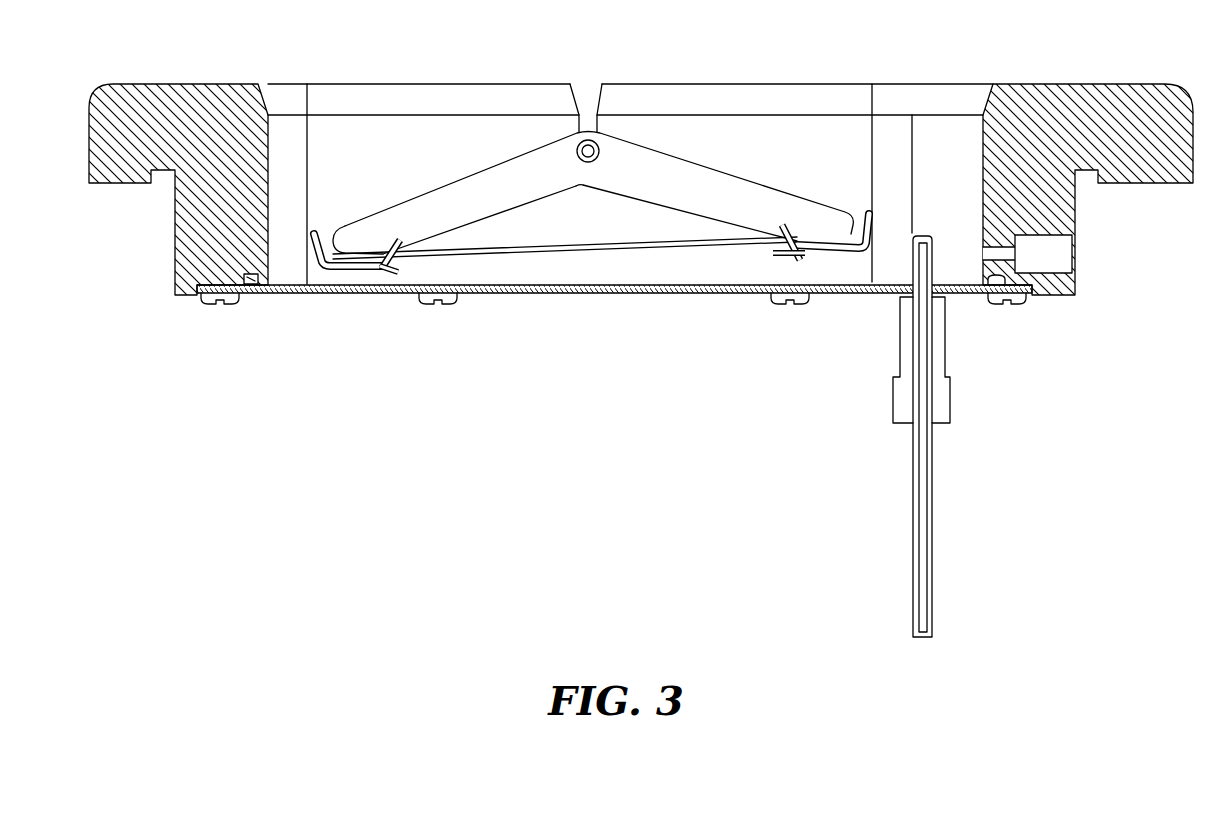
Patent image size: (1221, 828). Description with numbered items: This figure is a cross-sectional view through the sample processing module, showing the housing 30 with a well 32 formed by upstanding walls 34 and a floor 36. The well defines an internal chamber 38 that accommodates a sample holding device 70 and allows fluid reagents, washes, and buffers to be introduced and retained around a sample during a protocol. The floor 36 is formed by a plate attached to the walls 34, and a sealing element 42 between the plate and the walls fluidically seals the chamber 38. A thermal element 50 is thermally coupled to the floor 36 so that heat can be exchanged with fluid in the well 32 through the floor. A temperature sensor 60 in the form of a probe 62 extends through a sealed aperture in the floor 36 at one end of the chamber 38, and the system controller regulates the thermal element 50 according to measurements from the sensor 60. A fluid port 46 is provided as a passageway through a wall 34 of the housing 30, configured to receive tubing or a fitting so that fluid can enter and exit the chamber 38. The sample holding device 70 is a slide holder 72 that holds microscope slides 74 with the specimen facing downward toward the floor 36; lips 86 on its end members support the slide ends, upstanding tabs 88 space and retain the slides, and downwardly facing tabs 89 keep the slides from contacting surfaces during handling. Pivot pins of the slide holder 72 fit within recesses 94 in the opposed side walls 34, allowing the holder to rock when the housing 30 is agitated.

The housing 30 is at (158, 110).
The well 32 is at (787, 133).
The upstanding wall 34 is at (980, 140).
The floor 36 is at (547, 276).
The chamber 38 is at (318, 152).
The sealing element 42 is at (245, 278).
The fluid port 46 is at (1055, 251).
The thermal element 50 is at (312, 297).
The temperature sensor 60 is at (925, 395).
The probe 62 is at (928, 247).
The sample holding device 70 is at (593, 135).
The slide holder 72 is at (487, 190).
The microscope slide 74 is at (588, 246).
The lip 86 is at (832, 248).
The upstanding tab 88 is at (392, 247).
The downwardly facing tab 89 is at (385, 268).
The recess 94 is at (587, 105).